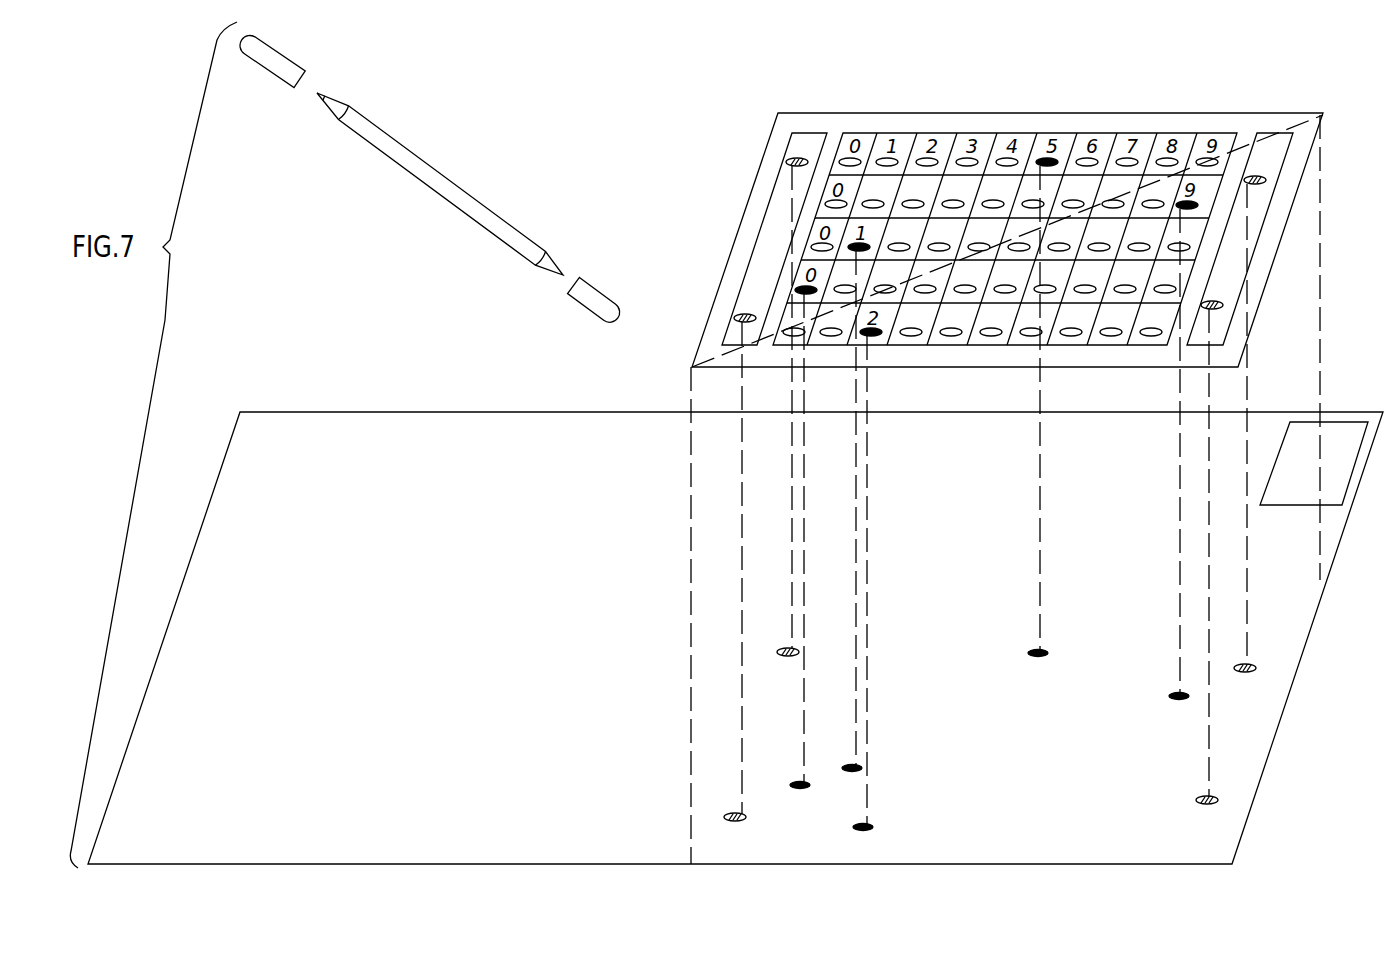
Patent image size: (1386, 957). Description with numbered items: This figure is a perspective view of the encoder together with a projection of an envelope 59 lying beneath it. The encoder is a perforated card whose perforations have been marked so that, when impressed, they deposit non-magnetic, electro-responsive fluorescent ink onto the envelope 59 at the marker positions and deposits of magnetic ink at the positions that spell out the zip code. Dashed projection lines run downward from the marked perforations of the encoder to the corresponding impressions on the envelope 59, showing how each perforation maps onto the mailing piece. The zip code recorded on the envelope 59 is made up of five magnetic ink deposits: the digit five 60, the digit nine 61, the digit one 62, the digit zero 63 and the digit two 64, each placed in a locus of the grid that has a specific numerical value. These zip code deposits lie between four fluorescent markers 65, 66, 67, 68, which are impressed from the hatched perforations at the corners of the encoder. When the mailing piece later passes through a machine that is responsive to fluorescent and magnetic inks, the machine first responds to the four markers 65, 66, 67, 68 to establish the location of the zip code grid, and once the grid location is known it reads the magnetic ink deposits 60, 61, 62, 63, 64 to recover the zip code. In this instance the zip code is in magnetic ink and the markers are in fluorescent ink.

The envelope 59 is at (563, 422).
The zip code digit mark for numeral five 60 is at (1042, 656).
The zip code digit mark for numeral nine 61 is at (1183, 702).
The zip code digit mark for numeral one 62 is at (856, 771).
The zip code digit mark for numeral zero 63 is at (797, 790).
The zip code digit mark for numeral two 64 is at (868, 824).
The marker 65 is at (792, 657).
The marker 66 is at (737, 822).
The marker 67 is at (1248, 673).
The marker 68 is at (1210, 806).